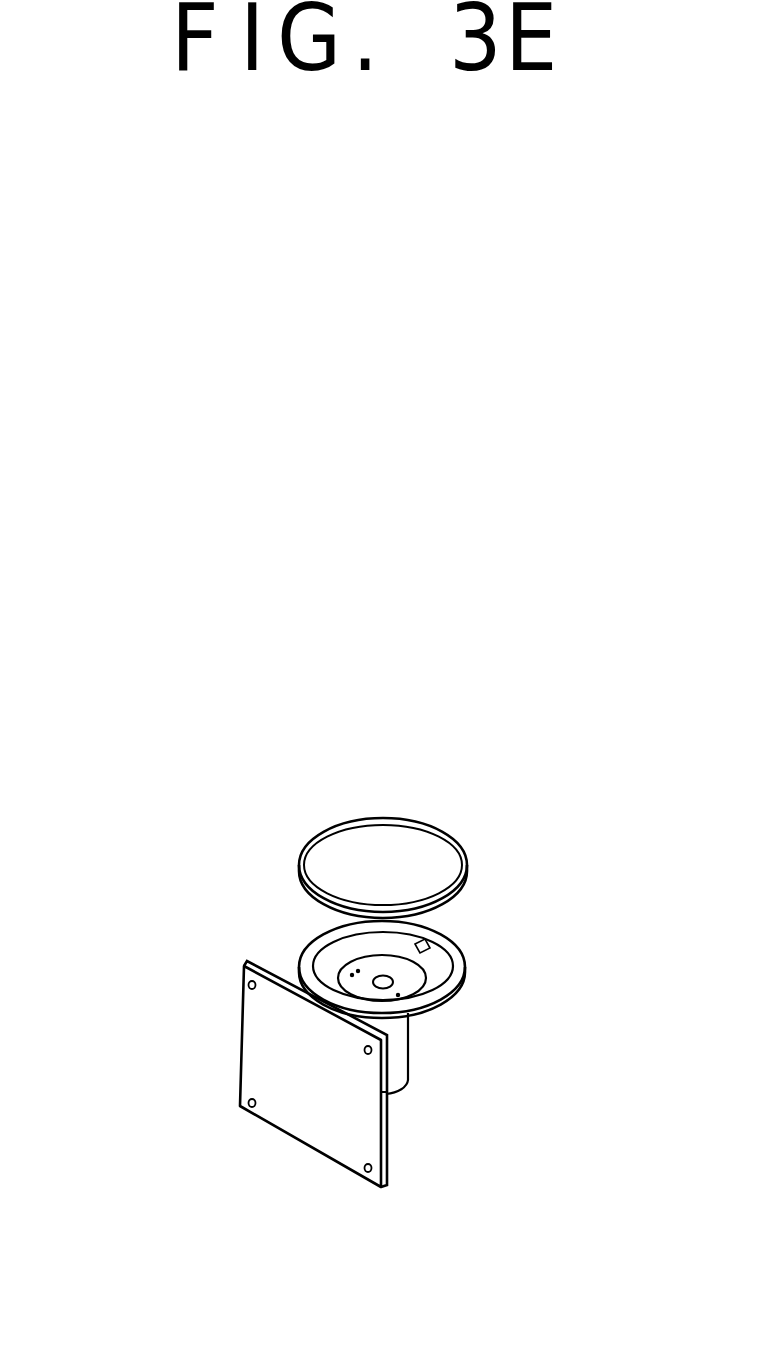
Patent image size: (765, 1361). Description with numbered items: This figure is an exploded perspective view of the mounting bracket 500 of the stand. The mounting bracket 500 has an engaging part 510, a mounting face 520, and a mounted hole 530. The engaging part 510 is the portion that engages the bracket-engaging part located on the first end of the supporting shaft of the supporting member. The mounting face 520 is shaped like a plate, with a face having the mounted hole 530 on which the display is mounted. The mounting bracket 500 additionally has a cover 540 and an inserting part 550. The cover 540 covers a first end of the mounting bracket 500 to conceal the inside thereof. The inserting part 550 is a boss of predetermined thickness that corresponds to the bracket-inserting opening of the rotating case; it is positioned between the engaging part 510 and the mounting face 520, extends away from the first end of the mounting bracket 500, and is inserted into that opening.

The mounting bracket 500 is at (212, 837).
The engaging part 510 is at (408, 1047).
The mounting face 520 is at (320, 1127).
The mounted hole 530 is at (255, 1113).
The cover 540 is at (470, 872).
The inserting part 550 is at (385, 1095).